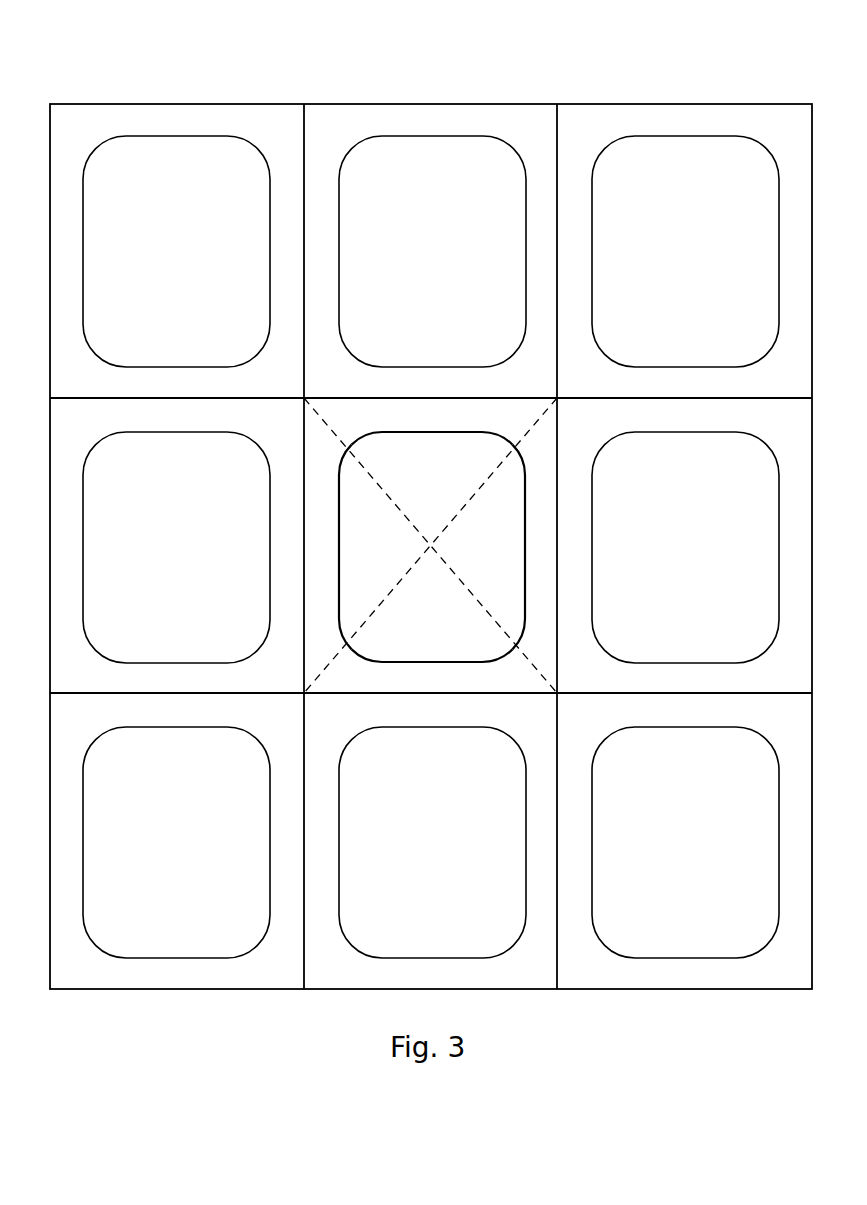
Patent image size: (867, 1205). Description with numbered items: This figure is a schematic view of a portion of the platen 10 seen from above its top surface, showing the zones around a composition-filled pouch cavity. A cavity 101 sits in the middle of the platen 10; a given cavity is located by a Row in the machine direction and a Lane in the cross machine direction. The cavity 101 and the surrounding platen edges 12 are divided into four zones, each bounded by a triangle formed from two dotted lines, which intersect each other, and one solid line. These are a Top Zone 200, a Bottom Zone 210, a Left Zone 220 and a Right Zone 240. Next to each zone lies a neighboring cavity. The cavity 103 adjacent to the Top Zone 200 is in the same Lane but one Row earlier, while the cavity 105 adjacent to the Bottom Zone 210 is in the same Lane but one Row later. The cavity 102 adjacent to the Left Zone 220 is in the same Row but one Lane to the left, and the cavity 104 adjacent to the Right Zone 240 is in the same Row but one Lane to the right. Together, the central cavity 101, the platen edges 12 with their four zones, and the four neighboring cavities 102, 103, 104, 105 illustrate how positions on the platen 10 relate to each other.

The platen 10 is at (431, 502).
The platen edges 12 is at (417, 423).
The cavity 101 is at (434, 547).
The cavity 102 is at (156, 557).
The cavity 103 is at (409, 259).
The cavity 104 is at (663, 557).
The cavity 105 is at (409, 852).
The Top Zone 200 is at (473, 452).
The Bottom Zone 210 is at (457, 642).
The Left Zone 220 is at (350, 504).
The Right Zone 240 is at (512, 504).